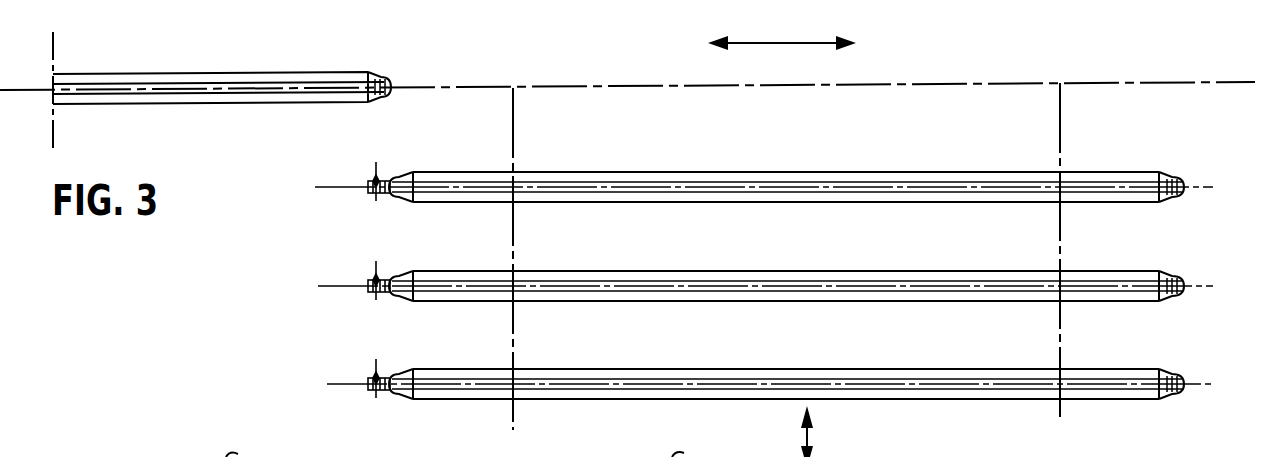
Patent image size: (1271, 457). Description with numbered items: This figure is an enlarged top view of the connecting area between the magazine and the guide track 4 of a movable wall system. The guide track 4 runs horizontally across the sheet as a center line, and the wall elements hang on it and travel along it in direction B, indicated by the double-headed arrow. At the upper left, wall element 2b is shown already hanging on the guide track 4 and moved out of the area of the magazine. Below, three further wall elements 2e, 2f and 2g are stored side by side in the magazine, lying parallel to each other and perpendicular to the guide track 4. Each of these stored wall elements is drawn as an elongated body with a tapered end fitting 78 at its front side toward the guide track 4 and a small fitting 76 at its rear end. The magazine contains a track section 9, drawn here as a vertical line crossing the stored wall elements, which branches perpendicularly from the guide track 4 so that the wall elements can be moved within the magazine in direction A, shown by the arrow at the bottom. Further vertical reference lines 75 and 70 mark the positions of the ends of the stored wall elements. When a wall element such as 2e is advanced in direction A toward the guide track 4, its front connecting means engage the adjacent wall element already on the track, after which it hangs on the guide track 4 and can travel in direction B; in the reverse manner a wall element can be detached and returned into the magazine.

The wall element 2b is at (262, 77).
The wall element 2e is at (1118, 177).
The wall element 2f is at (1118, 276).
The wall element 2g is at (1118, 374).
The guide track 4 is at (1143, 83).
The track section 9 is at (512, 410).
The reference plane line 70 is at (1062, 410).
The reference plane line 75 is at (513, 90).
The tube inlet fitting 76 is at (372, 184).
The tube nozzle end 78 is at (377, 76).
The direction of motion in magazine A is at (812, 446).
The direction of motion on guide track B is at (770, 44).